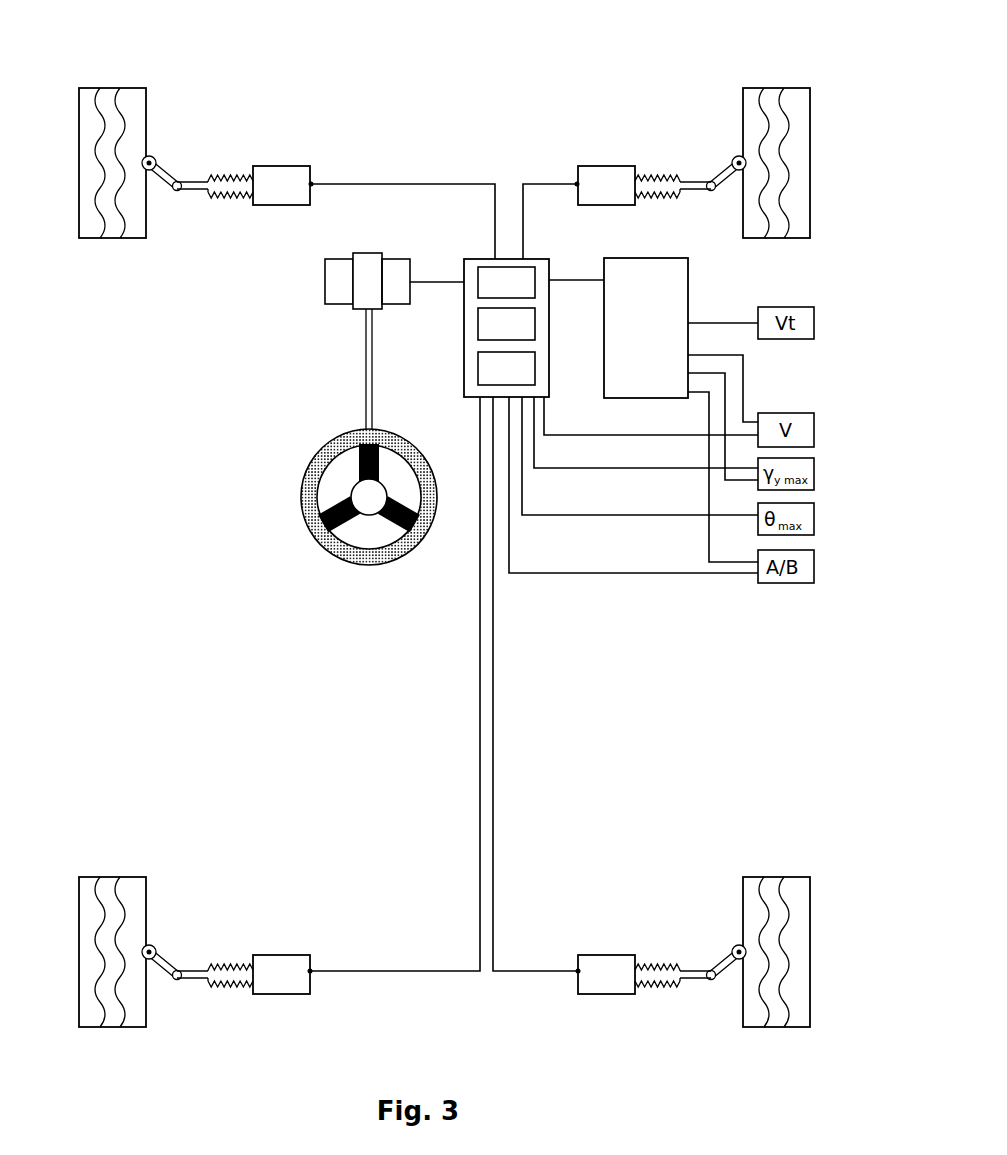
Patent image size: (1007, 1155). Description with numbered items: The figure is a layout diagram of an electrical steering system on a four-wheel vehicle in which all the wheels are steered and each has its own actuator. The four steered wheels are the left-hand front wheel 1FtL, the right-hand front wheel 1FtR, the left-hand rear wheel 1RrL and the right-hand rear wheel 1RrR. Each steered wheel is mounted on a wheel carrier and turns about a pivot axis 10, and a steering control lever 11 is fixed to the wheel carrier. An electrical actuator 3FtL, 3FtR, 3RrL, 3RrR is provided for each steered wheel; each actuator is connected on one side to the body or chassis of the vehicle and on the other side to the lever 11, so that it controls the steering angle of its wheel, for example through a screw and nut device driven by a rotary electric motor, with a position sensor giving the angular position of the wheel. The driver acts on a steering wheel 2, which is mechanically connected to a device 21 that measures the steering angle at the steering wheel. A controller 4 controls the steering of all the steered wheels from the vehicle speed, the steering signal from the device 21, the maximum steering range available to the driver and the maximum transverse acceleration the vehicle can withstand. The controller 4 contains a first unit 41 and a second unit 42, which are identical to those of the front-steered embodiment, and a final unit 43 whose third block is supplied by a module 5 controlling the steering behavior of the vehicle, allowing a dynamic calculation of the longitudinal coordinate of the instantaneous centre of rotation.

The left-hand front steered wheel 1FtL is at (143, 40).
The right-hand front steered wheel 1FtR is at (807, 38).
The left-hand rear steered wheel 1RrL is at (145, 832).
The right-hand rear steered wheel 1RrR is at (788, 872).
The left-hand front electrical actuator 3FtL is at (272, 181).
The right-hand front electrical actuator 3FtR is at (596, 180).
The left-hand rear electrical actuator 3RrL is at (268, 950).
The right-hand rear electrical actuator 3RrR is at (619, 948).
The pivot axis 10 is at (155, 158).
The steering control lever 11 is at (166, 187).
The steering wheel 2 is at (300, 498).
The steering wheel angle measuring device 21 is at (337, 281).
The controller 4 is at (523, 302).
The first unit 41 is at (550, 371).
The second unit 42 is at (550, 312).
The final unit 43 is at (550, 268).
The steering behavior control module 5 is at (672, 257).